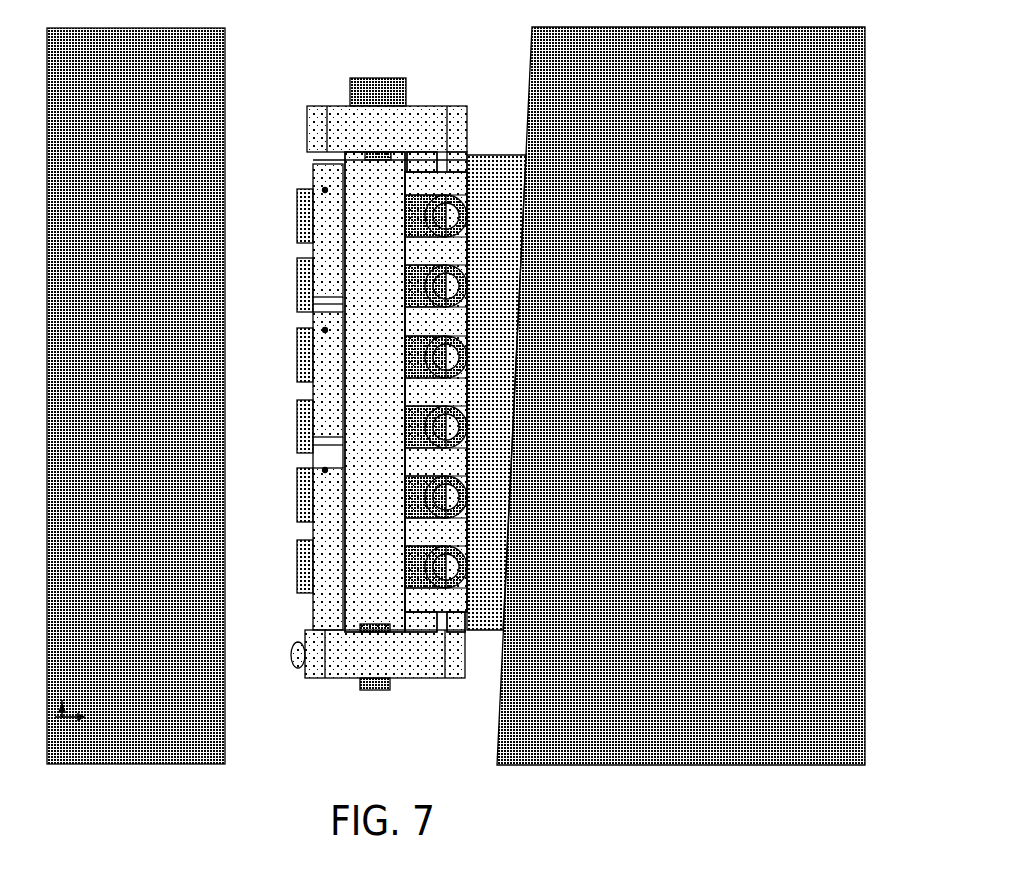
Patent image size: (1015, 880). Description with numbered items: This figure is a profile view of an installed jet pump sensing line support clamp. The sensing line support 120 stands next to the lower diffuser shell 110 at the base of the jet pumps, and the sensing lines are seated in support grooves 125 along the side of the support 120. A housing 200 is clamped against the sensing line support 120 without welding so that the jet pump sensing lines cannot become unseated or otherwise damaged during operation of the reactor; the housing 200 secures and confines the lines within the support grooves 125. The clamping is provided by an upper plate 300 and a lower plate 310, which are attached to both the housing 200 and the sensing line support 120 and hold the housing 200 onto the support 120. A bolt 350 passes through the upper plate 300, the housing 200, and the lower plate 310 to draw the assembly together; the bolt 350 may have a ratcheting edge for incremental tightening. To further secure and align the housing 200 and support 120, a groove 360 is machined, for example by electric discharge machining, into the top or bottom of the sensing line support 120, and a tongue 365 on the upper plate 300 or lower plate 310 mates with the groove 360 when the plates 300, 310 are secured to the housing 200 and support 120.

The lower diffuser shell 110 is at (840, 236).
The sensing line support 120 is at (493, 433).
The support grooves 125 is at (478, 595).
The housing 200 is at (327, 579).
The upper plate 300 is at (412, 132).
The lower plate 310 is at (435, 678).
The bolt 350 is at (380, 92).
The groove 360 is at (468, 165).
The tongue 365 is at (450, 172).